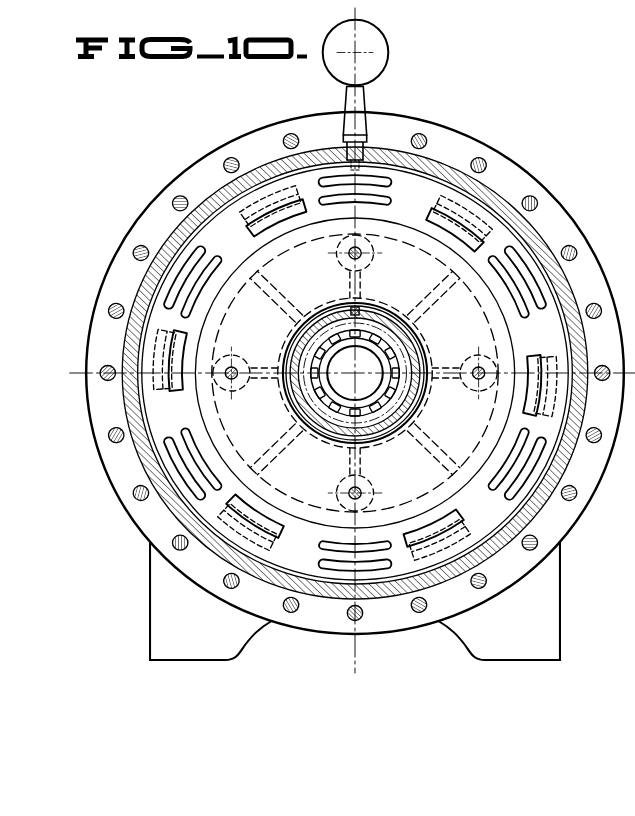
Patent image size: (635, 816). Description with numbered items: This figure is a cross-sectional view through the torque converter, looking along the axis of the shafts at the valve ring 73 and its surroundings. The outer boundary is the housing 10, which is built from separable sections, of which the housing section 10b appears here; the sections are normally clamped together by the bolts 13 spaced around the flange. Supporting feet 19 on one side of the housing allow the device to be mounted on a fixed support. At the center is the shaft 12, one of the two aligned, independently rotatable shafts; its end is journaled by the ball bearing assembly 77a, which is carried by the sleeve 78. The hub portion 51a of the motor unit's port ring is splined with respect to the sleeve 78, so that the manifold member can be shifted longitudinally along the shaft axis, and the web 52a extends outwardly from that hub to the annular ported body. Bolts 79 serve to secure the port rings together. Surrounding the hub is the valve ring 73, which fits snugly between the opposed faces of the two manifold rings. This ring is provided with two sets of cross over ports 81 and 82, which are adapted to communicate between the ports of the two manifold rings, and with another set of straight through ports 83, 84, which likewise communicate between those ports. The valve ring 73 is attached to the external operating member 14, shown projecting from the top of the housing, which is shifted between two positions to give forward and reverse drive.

The housing 10 is at (567, 217).
The housing section 10b is at (501, 203).
The shaft 12 is at (343, 389).
The bolts 13 is at (476, 156).
The operating member 14 is at (388, 58).
The supporting feet 19 is at (498, 650).
The hub portion 51a is at (428, 347).
The web 52a is at (466, 326).
The valve ring 73 is at (149, 329).
The ball bearing assembly 77a is at (372, 405).
The sleeve 78 is at (302, 396).
The bolts 79 is at (352, 261).
The cross over ports 81 is at (556, 364).
The cross over ports 82 is at (433, 212).
The straight through ports 83 is at (327, 181).
The straight through ports 84 is at (383, 198).